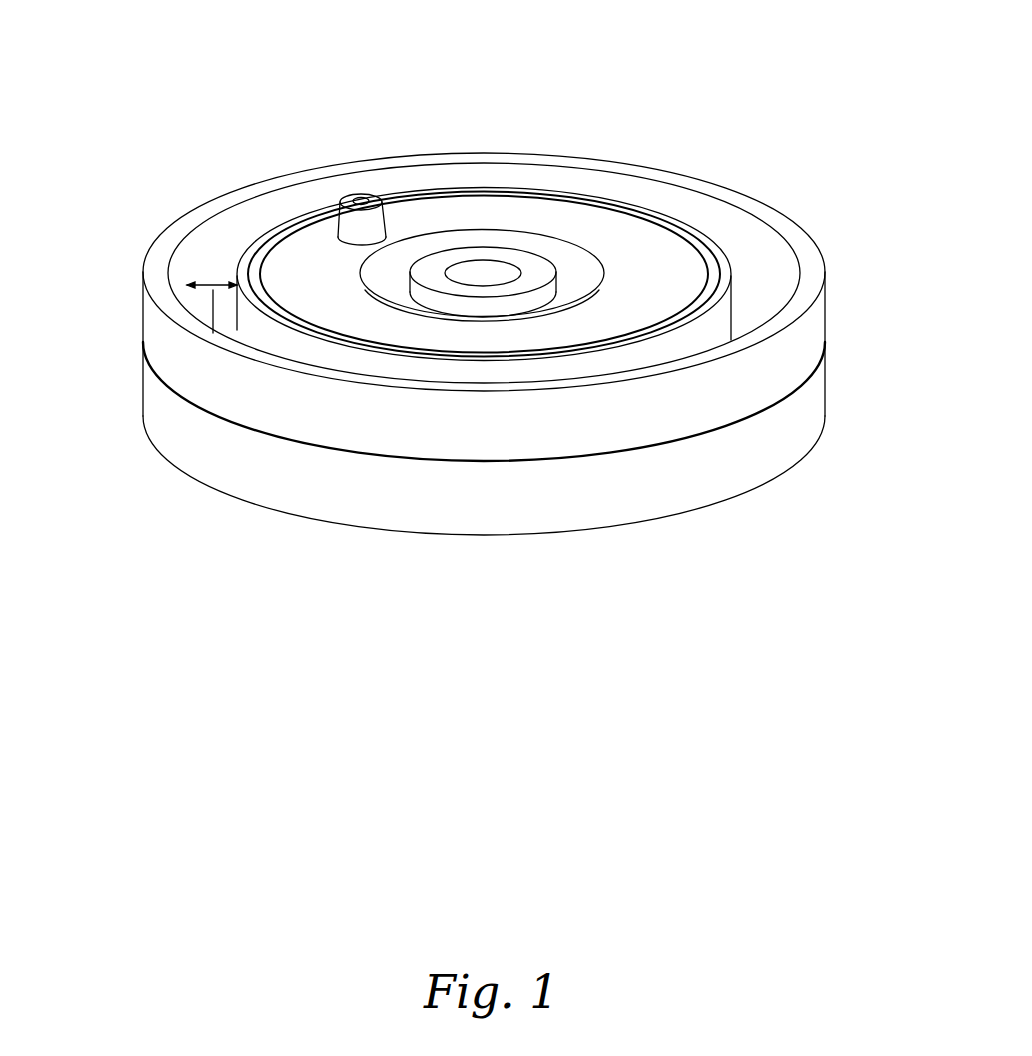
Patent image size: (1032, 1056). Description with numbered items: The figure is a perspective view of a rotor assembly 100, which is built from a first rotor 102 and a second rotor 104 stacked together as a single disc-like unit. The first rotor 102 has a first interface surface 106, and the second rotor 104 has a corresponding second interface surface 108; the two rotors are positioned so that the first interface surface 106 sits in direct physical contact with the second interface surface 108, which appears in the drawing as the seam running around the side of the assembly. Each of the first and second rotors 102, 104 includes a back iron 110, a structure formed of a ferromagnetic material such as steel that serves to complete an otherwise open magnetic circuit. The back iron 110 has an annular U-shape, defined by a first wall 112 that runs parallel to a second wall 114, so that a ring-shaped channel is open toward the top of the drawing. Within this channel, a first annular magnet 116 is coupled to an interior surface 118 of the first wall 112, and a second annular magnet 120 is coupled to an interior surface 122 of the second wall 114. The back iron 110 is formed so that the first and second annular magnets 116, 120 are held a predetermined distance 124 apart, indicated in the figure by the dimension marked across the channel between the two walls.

The rotor assembly 100 is at (150, 73).
The first rotor 102 is at (263, 517).
The second rotor 104 is at (125, 230).
The first interface surface 106 is at (150, 290).
The second interface surface 108 is at (823, 350).
The back iron 110 is at (195, 211).
The first wall 112 is at (143, 308).
The second wall 114 is at (260, 282).
The first annular magnet 116 is at (263, 224).
The interior surface 118 is at (293, 200).
The second annular magnet 120 is at (730, 283).
The interior surface 122 is at (687, 327).
The predetermined distance 124 is at (210, 290).